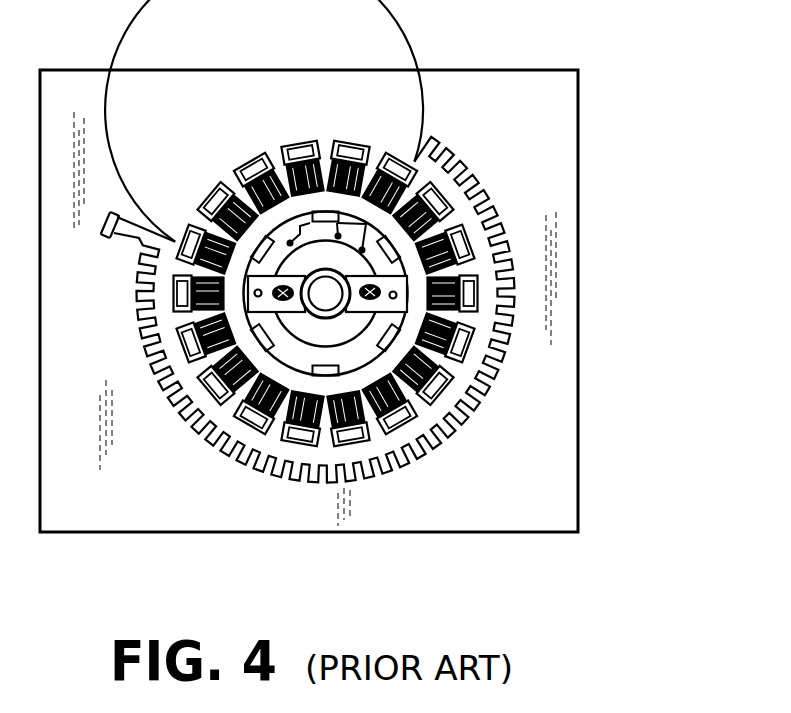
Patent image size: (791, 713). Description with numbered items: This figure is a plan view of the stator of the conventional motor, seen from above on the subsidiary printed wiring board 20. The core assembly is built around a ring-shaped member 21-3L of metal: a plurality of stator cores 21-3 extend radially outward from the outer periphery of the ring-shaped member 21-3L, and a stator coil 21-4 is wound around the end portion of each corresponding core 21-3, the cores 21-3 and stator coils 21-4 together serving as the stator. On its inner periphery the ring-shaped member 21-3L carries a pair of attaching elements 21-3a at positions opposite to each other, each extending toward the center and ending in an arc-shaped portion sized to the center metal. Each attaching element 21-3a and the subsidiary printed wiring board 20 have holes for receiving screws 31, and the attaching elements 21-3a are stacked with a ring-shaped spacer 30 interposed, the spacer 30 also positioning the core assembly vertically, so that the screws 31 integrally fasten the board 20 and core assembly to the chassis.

The subsidiary printed wiring board 20 is at (560, 387).
The stator cores 21-3 is at (305, 450).
The ring-shaped member 21-3L is at (357, 208).
The attaching elements 21-3a is at (267, 283).
The stator coils 21-4 is at (205, 333).
The ring-shaped spacer 30 is at (347, 333).
The screws 31 is at (285, 290).